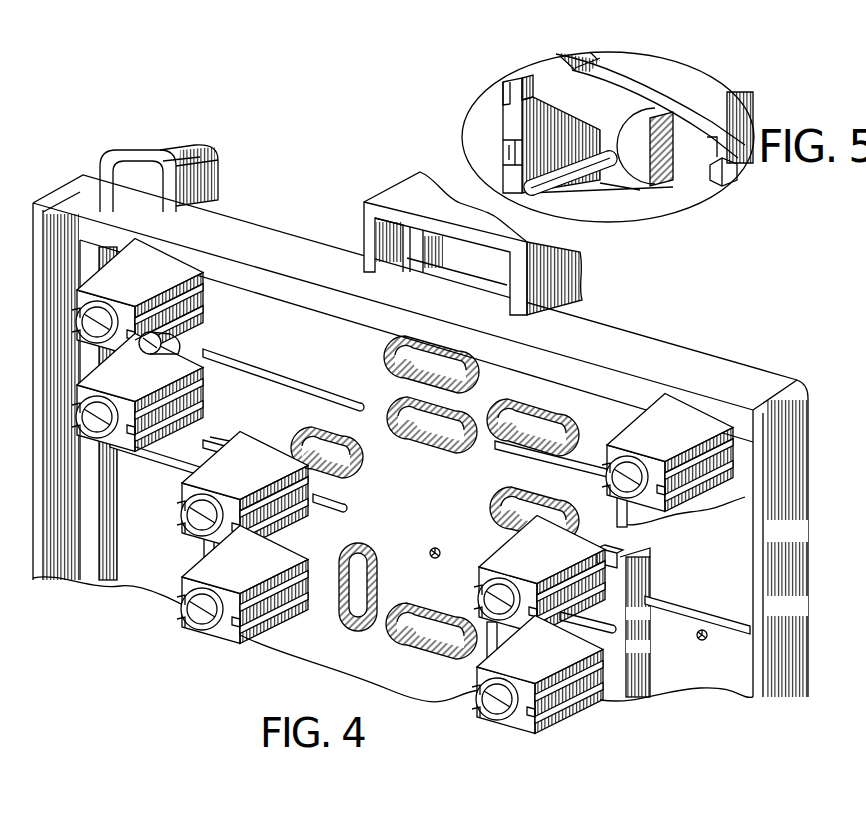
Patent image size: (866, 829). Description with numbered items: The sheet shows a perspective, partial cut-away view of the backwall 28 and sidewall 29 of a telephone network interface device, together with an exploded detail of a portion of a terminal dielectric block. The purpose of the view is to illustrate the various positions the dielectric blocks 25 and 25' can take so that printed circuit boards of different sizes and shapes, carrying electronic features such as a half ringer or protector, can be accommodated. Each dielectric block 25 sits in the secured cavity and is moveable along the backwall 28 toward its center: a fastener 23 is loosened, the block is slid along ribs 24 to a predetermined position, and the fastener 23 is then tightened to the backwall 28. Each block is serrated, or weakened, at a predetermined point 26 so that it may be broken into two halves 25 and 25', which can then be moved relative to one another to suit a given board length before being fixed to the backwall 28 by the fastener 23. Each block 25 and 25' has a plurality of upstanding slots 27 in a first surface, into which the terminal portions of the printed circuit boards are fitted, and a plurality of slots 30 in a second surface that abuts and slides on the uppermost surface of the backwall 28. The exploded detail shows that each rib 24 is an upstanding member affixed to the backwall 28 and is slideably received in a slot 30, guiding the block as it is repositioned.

In FIG. 4, the fastener 23 is at (170, 336).
In FIG. 4, the rib 24 is at (338, 392).
In FIG. 4, the dielectric block 25 is at (391, 533).
In FIG. 5, the dielectric block 25 is at (576, 100).
In FIG. 4, the dielectric block half 25' is at (402, 375).
In FIG. 5, the dielectric block half 25' is at (608, 137).
In FIG. 4, the predetermined point 26 is at (240, 447).
In FIG. 4, the upstanding slot 27 is at (134, 373).
In FIG. 5, the upstanding slot 27 is at (507, 152).
In FIG. 4, the backwall 28 is at (278, 350).
In FIG. 4, the sidewall 29 is at (225, 256).
In FIG. 4, the slot 30 is at (208, 364).
In FIG. 5, the slot 30 is at (510, 96).